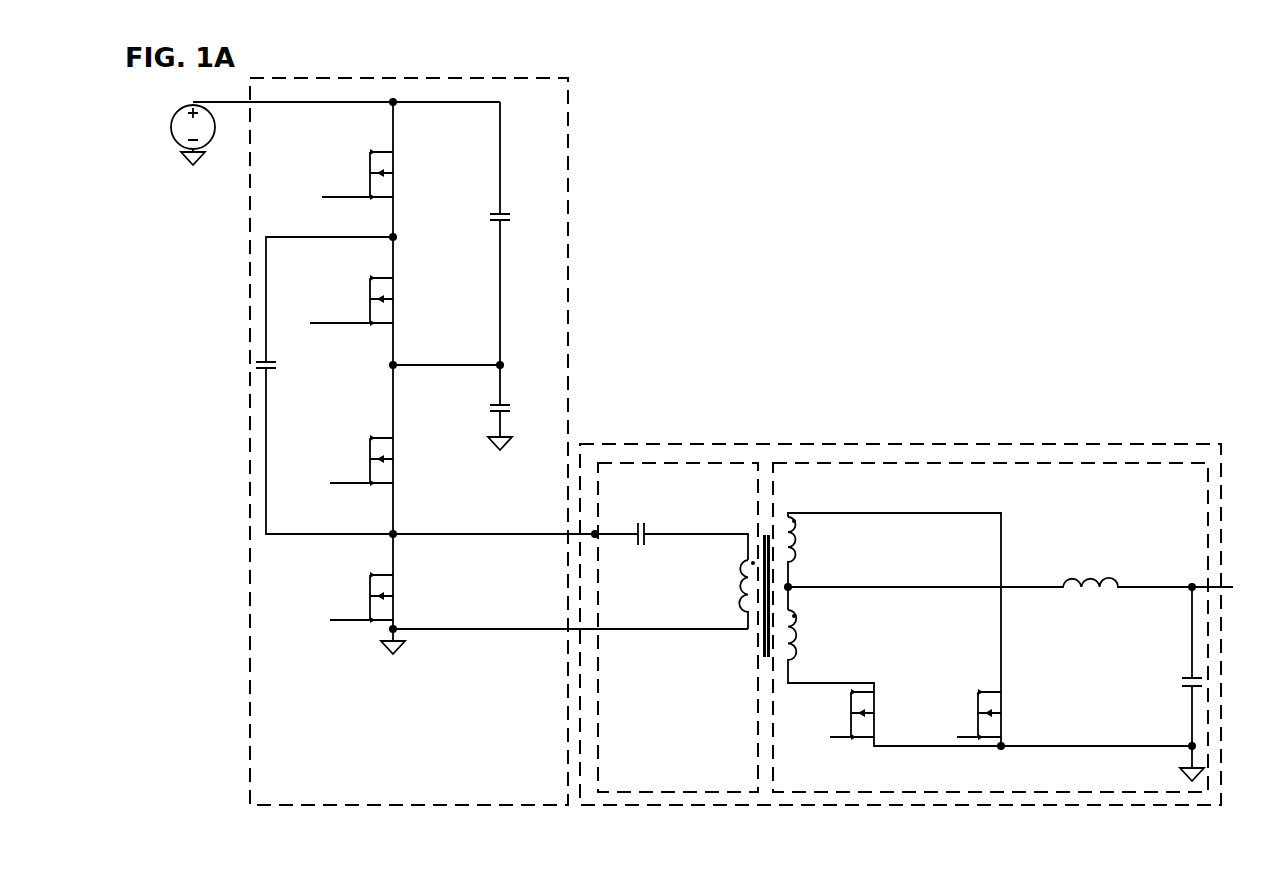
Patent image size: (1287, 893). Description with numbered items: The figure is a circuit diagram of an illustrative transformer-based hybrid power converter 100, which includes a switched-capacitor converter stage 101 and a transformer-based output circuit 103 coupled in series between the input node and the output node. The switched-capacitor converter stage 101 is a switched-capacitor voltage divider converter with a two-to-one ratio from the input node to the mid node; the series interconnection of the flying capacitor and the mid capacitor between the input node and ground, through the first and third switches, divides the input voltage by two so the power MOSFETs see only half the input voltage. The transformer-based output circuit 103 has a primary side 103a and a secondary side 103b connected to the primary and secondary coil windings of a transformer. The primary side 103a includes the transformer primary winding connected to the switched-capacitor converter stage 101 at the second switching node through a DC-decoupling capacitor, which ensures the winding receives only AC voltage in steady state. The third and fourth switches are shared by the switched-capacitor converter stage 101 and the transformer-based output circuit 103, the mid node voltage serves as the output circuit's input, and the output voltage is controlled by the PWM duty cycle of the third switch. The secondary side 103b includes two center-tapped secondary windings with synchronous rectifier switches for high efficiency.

The transformer-based hybrid power converter 100 is at (744, 89).
The switched-capacitor converter stage 101 is at (440, 805).
The transformer-based output circuit 103 is at (1133, 805).
The primary side 103a is at (710, 792).
The secondary side 103b is at (802, 792).